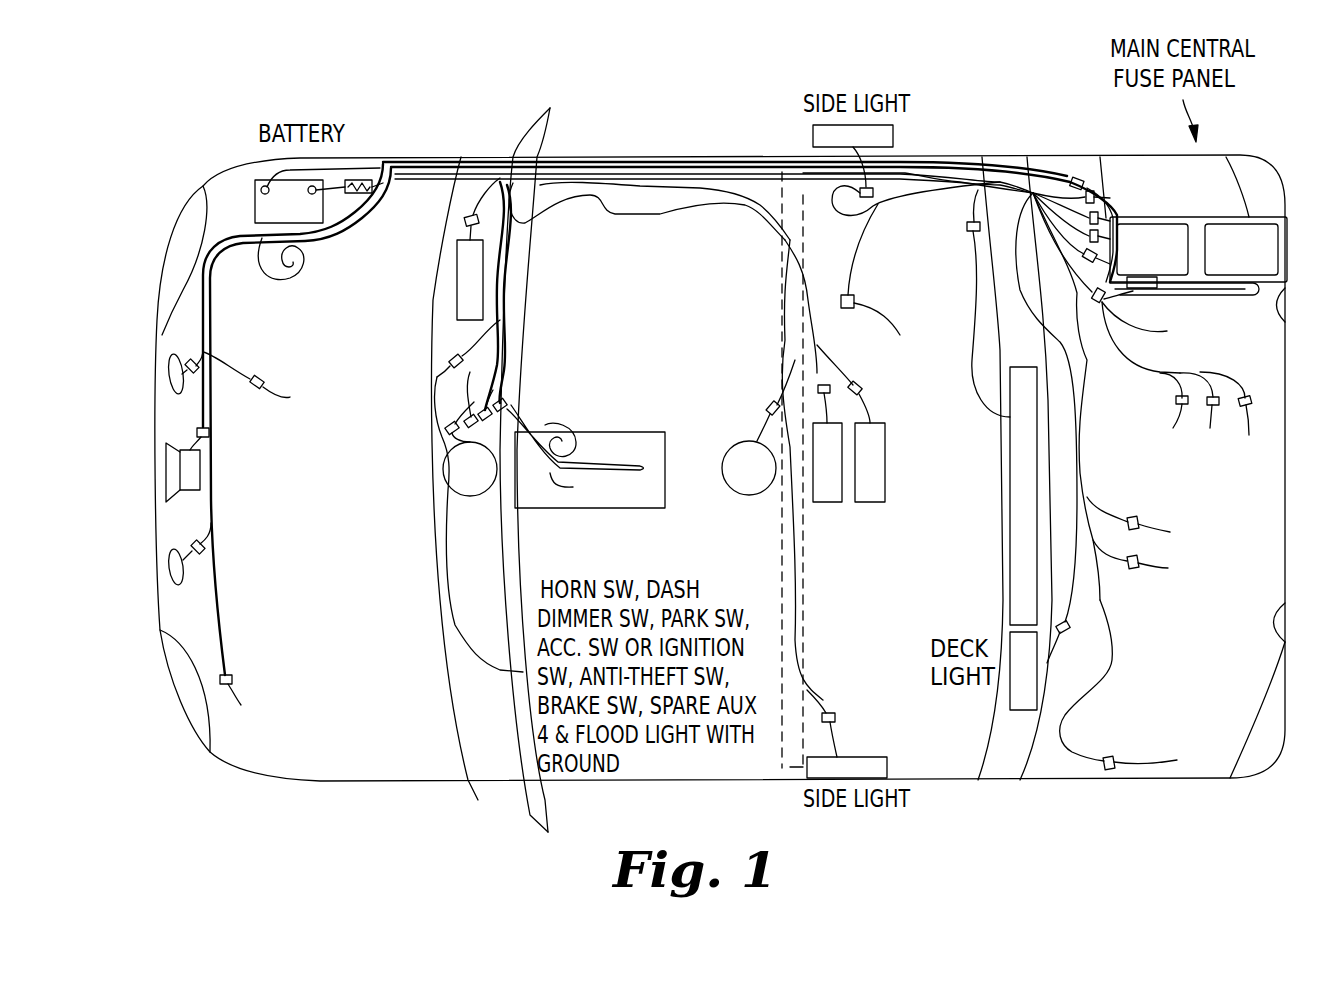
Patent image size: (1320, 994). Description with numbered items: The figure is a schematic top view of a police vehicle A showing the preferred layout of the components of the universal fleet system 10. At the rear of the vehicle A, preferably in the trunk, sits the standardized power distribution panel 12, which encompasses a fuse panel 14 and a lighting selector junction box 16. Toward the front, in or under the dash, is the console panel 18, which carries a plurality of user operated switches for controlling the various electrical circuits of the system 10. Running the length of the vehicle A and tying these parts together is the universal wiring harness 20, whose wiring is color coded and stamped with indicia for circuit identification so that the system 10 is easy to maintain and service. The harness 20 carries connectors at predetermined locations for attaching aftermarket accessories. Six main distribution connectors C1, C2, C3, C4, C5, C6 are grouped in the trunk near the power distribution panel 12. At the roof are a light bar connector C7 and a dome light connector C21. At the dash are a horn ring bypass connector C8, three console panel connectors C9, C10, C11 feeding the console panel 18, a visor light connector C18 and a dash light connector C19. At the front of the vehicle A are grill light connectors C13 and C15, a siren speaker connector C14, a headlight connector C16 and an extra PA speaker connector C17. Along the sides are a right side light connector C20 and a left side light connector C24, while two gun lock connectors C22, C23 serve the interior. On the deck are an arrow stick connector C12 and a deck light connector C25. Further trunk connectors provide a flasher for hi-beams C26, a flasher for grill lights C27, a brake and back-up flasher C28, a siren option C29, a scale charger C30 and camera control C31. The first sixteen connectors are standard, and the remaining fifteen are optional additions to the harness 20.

The universal fleet system 10 is at (607, 78).
The police vehicle A is at (410, 160).
The power distribution panel 12 is at (1266, 196).
The fuse panel 14 is at (1173, 261).
The lighting selector junction box 16 is at (1261, 259).
The console panel 18 is at (616, 432).
The universal wiring harness 20 is at (680, 172).
The connector C1 is at (1072, 177).
The connector C2 is at (1093, 191).
The connector C3 is at (1107, 212).
The connector C4 is at (1084, 256).
The connector C5 is at (1036, 235).
The connector C6 is at (1104, 302).
The connector C7 is at (858, 304).
The connector C8 is at (451, 358).
The connector C9 is at (478, 412).
The connector C10 is at (465, 418).
The connector C11 is at (508, 404).
The connector C12 is at (966, 230).
The connector C13 is at (187, 362).
The connector C14 is at (197, 436).
The connector C15 is at (196, 546).
The connector C16 is at (258, 674).
The connector C17 is at (283, 372).
The connector C18 is at (465, 222).
The connector C19 is at (448, 433).
The connector C20 is at (875, 207).
The connector C21 is at (768, 410).
The connector C22 is at (824, 385).
The connector C23 is at (860, 387).
The connector C24 is at (836, 719).
The connector C25 is at (1070, 627).
The connector C26 is at (1175, 399).
The connector C27 is at (1213, 396).
The connector C28 is at (1262, 386).
The connector C29 is at (1148, 505).
The connector C30 is at (1123, 571).
The connector C31 is at (1115, 759).